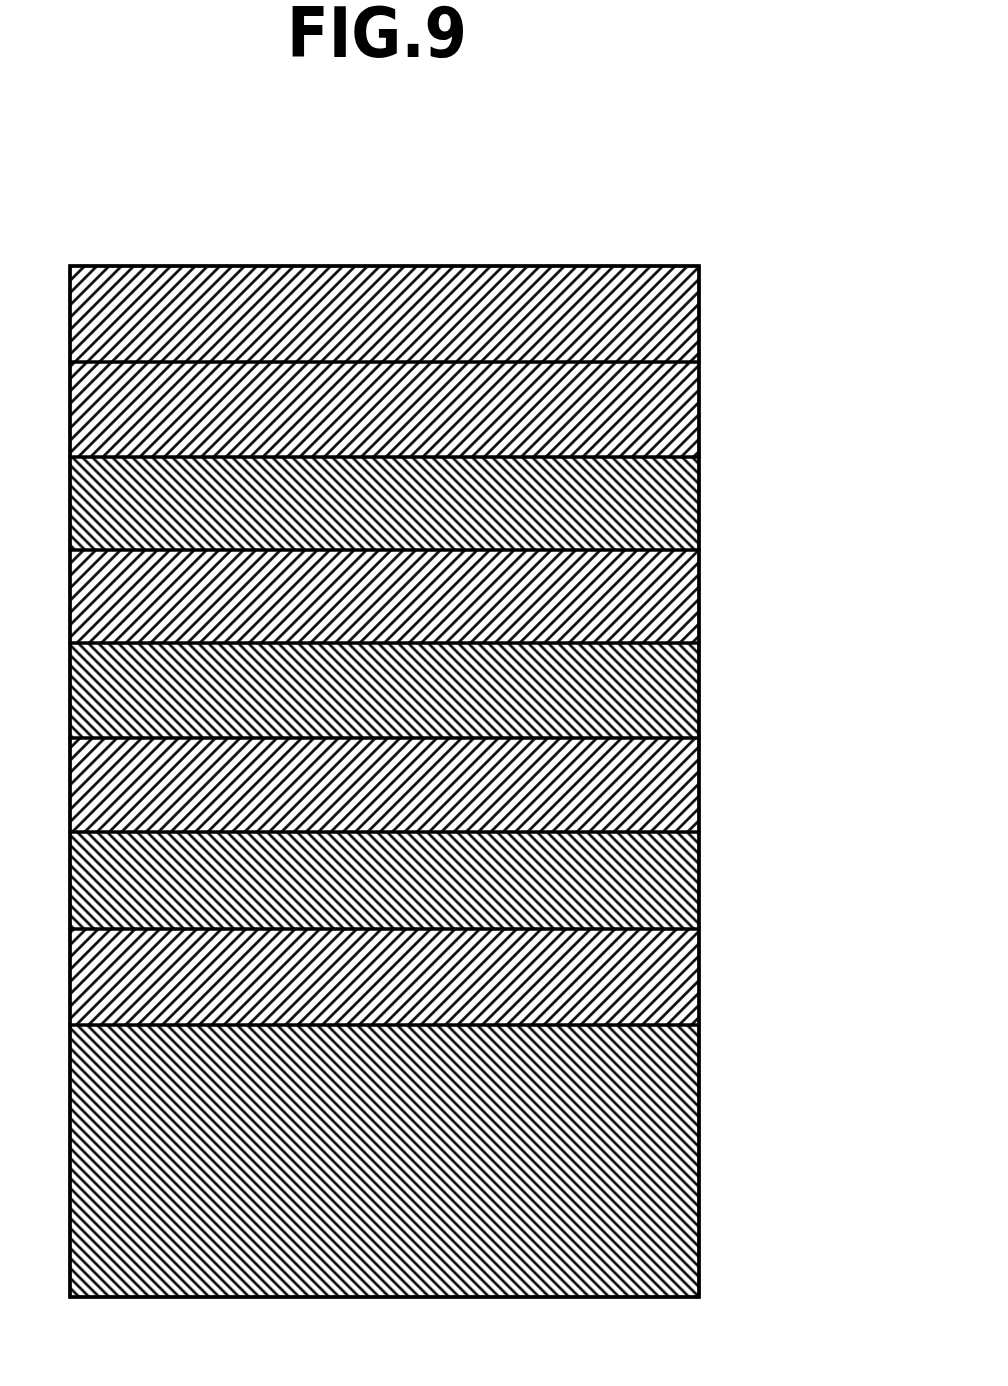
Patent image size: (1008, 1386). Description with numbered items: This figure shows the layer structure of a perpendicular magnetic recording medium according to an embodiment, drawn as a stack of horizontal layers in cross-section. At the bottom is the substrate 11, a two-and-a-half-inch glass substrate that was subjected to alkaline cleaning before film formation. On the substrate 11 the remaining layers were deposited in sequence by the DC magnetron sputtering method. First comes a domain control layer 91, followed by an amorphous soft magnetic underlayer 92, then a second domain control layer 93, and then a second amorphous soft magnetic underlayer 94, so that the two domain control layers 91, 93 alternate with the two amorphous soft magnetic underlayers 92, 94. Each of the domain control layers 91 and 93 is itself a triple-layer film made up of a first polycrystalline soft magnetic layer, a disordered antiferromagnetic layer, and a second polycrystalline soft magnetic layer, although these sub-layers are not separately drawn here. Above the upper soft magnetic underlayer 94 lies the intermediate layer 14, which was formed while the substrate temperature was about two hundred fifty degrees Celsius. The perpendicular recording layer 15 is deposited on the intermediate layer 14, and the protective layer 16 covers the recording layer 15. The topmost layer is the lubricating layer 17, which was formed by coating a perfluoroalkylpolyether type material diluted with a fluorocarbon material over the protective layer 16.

The substrate 11 is at (663, 1163).
The domain control layer 91 is at (663, 975).
The amorphous soft magnetic underlayer 92 is at (663, 880).
The domain control layer 93 is at (663, 786).
The amorphous soft magnetic underlayer 94 is at (663, 690).
The intermediate layer 14 is at (663, 596).
The perpendicular recording layer 15 is at (663, 502).
The protective layer 16 is at (663, 406).
The lubricating layer 17 is at (663, 313).